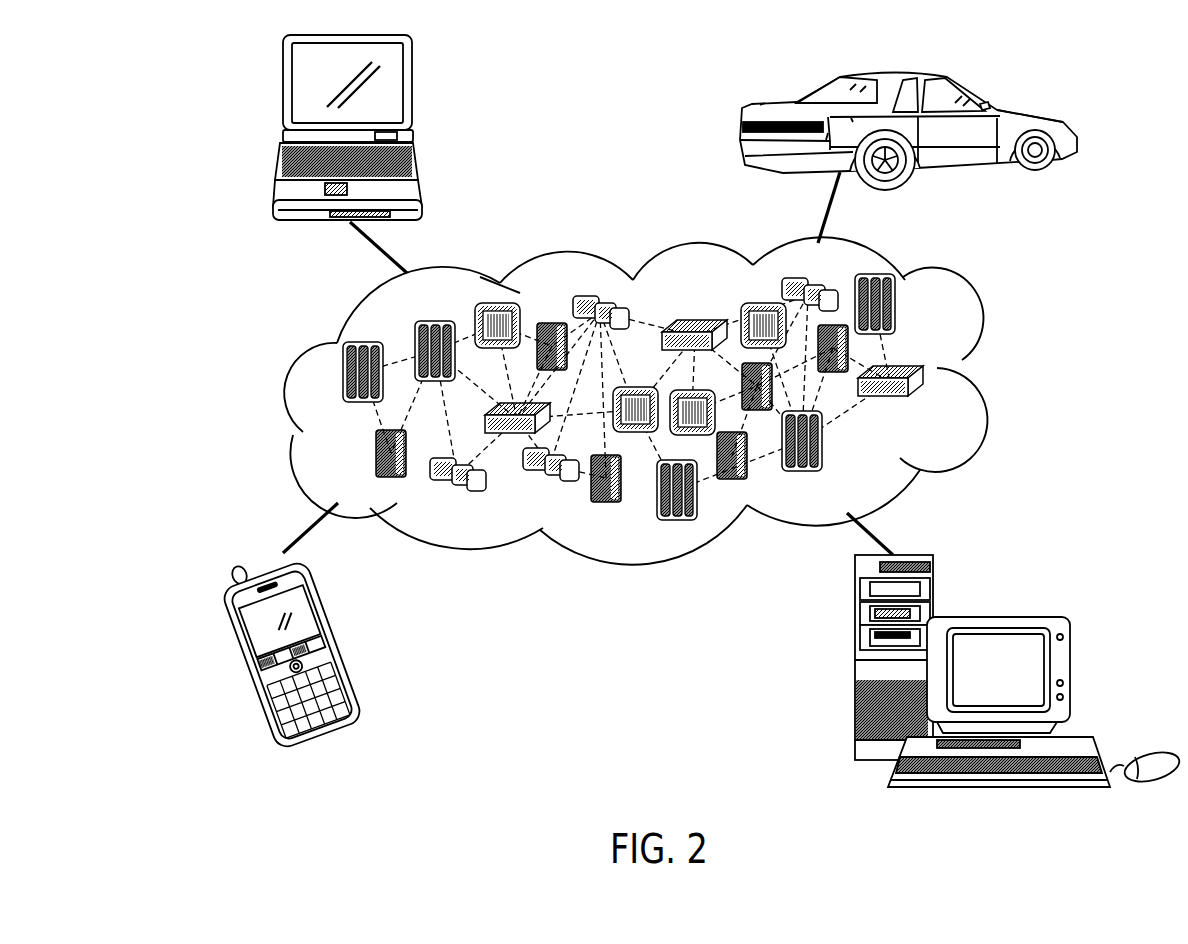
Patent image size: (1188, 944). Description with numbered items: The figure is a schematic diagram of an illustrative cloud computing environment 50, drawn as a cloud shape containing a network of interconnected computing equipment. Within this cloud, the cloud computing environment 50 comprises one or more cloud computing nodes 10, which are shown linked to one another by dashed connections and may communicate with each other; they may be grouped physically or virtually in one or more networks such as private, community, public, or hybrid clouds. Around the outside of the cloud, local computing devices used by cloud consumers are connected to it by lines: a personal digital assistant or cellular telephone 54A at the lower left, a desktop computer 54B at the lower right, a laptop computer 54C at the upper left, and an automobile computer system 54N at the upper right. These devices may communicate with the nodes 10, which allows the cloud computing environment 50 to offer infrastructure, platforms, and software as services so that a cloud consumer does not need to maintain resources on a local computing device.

The cloud computing node 10 is at (940, 427).
The cloud computing environment 50 is at (962, 313).
The personal digital assistant (PDA) or cellular telephone 54A is at (245, 657).
The desktop computer 54B is at (1005, 617).
The laptop computer 54C is at (284, 93).
The automobile computer system 54N is at (983, 92).